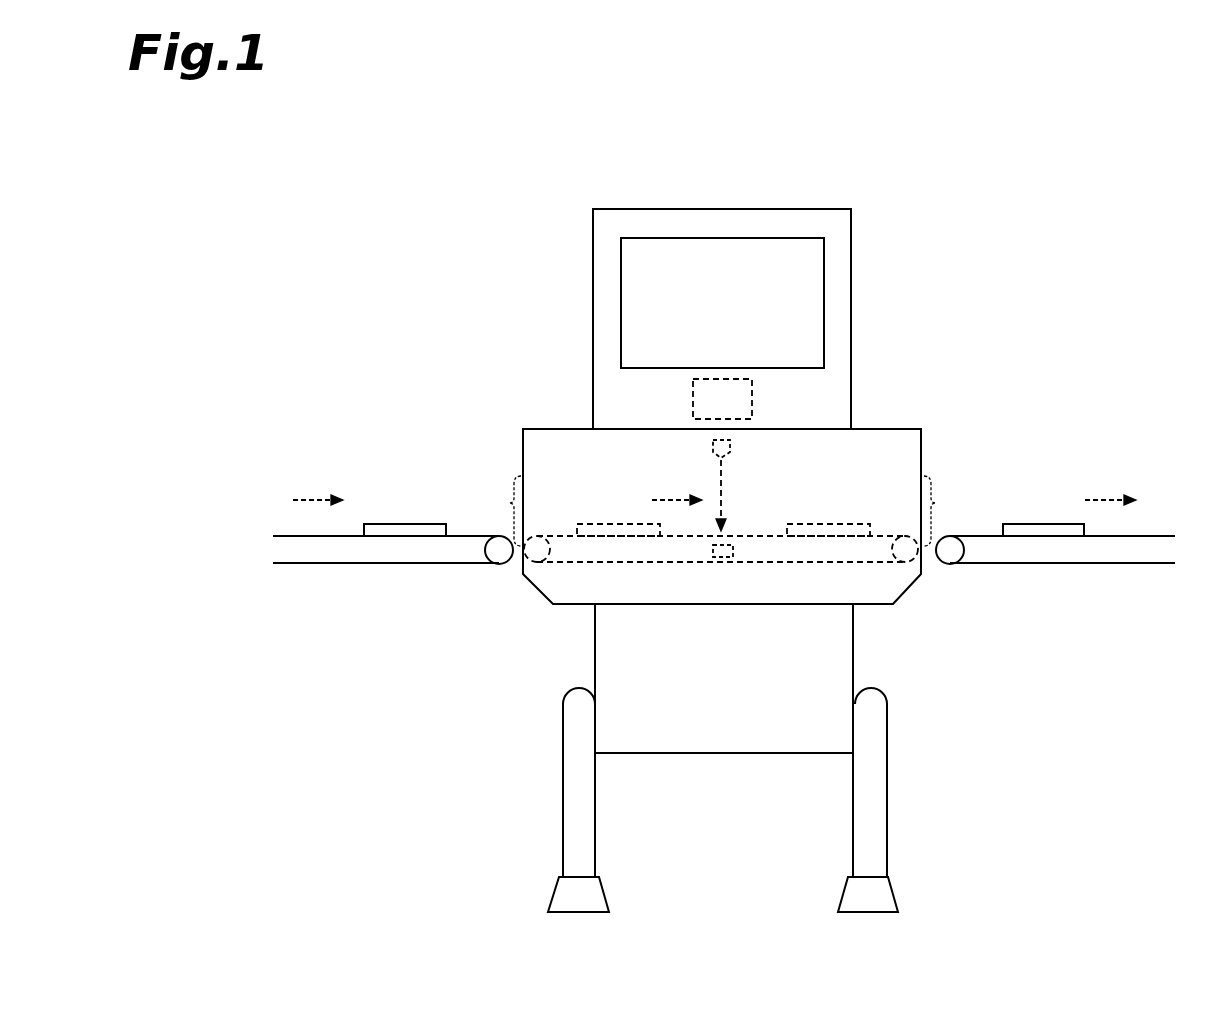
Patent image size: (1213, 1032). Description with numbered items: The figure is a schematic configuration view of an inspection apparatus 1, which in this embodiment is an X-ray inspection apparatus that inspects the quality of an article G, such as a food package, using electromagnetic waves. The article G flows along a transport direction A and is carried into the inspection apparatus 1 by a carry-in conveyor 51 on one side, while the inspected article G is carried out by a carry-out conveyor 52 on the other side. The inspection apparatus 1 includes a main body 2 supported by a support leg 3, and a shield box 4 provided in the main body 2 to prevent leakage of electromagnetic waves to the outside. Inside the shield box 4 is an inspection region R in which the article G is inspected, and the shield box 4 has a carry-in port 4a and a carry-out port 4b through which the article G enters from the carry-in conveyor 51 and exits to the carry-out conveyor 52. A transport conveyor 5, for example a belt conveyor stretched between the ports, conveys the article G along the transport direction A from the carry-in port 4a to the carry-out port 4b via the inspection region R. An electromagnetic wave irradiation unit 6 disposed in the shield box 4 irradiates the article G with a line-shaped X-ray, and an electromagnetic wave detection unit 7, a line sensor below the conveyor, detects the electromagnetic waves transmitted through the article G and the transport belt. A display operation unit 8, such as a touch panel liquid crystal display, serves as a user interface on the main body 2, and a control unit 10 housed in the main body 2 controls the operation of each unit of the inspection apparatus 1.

The inspection apparatus 1 is at (940, 170).
The main body 2 is at (593, 264).
The support leg 3 is at (563, 795).
The shield box 4 is at (921, 447).
The carry-in port 4a is at (496, 511).
The carry-out port 4b is at (949, 511).
The transport conveyor 5 is at (548, 546).
The electromagnetic wave irradiation unit 6 is at (730, 447).
The electromagnetic wave detection unit 7 is at (733, 551).
The display operation unit 8 is at (824, 320).
The control unit 10 is at (693, 403).
The carry-in conveyor 51 is at (358, 565).
The carry-out conveyor 52 is at (1127, 565).
The article G is at (397, 524).
The transport direction A is at (660, 500).
The inspection region R is at (771, 490).